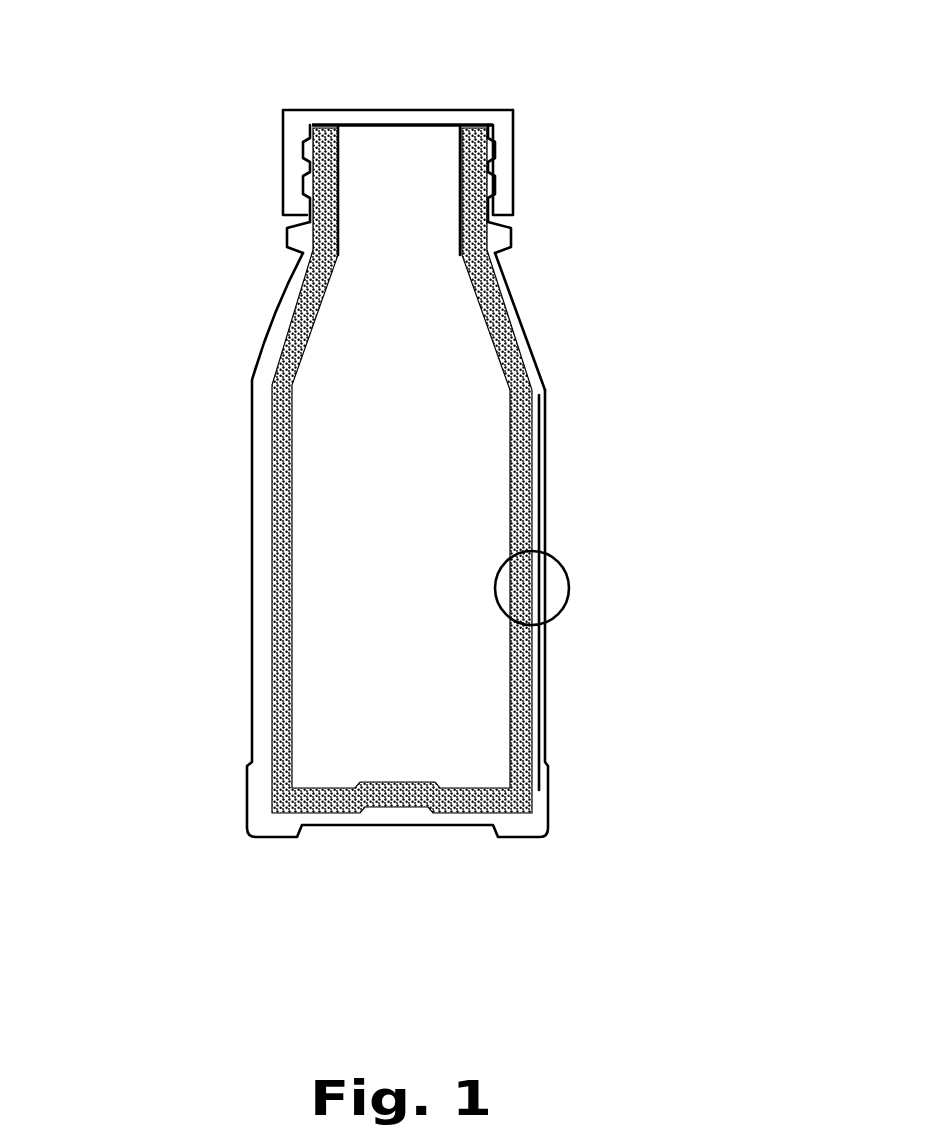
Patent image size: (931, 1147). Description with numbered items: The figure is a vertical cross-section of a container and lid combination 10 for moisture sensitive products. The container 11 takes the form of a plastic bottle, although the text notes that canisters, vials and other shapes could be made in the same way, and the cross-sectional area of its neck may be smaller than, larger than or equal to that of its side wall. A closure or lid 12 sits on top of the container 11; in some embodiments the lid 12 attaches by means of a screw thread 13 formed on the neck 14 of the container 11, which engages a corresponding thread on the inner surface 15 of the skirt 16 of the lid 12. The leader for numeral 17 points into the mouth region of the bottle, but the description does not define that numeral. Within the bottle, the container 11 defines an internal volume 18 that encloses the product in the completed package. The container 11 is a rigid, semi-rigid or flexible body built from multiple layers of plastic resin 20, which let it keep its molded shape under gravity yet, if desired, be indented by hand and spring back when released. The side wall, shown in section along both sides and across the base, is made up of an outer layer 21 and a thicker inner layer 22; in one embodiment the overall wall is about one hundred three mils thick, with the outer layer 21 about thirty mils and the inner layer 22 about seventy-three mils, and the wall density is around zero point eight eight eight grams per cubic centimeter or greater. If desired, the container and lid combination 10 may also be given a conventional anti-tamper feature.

The container and lid combination 10 is at (645, 163).
The container 11 is at (257, 377).
The lid 12 is at (290, 152).
The screw thread 13 is at (290, 172).
The neck 14 is at (508, 243).
The inner surface 15 is at (317, 107).
The skirt 16 is at (503, 173).
The opening 17 is at (397, 147).
The internal volume 18 is at (430, 518).
The multiple layers of plastic resin(s) 20 is at (566, 563).
The outer layer 21 is at (542, 470).
The inner layer 22 is at (503, 370).